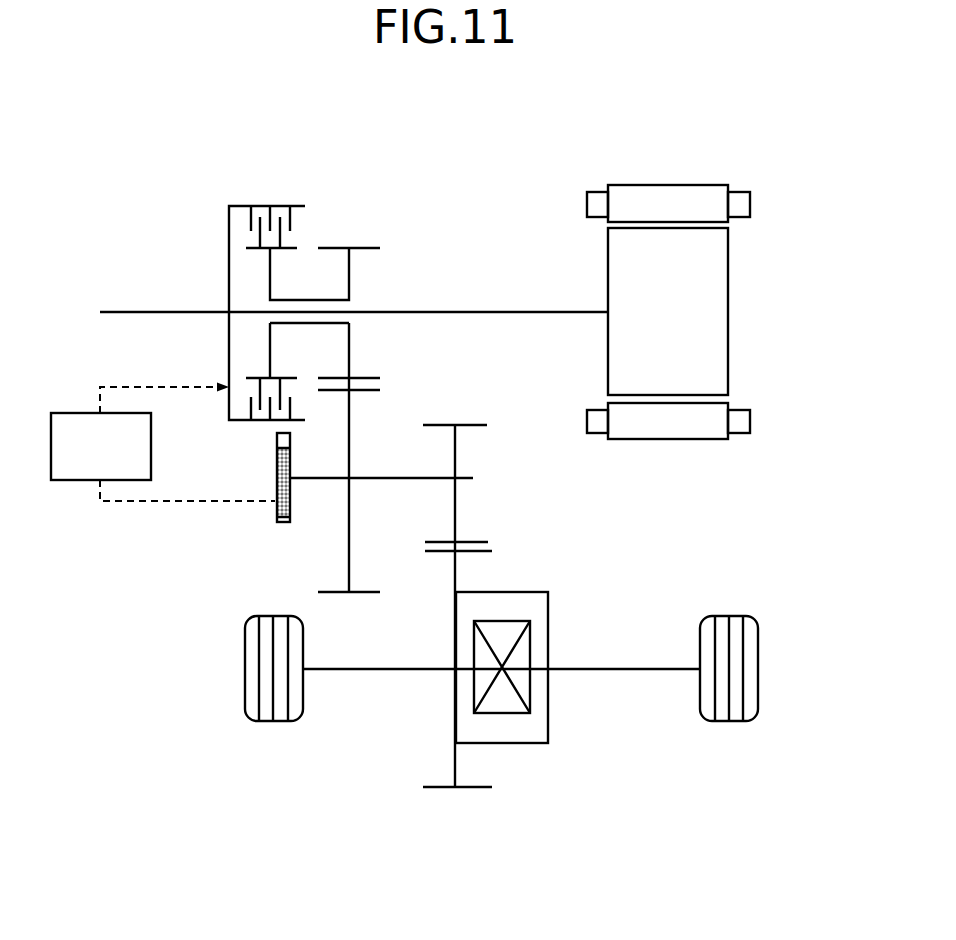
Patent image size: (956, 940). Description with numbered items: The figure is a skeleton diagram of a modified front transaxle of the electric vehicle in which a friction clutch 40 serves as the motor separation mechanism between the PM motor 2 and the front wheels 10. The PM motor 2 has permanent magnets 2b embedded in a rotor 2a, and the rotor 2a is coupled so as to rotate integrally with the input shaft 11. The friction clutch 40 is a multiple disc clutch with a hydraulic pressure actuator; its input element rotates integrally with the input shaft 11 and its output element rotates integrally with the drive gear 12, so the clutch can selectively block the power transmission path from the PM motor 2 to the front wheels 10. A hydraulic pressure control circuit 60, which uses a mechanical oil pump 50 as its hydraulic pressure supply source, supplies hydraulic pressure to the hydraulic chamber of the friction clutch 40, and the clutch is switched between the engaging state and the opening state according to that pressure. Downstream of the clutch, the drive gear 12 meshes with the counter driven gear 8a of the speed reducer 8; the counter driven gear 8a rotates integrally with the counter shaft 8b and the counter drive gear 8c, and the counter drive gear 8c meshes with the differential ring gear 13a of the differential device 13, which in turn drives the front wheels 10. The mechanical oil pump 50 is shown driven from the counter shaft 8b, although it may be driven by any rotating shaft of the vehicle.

The PM motor 2 is at (692, 274).
The rotor 2a is at (712, 280).
The permanent magnets 2b is at (664, 198).
The speed reducer 8 is at (457, 533).
The counter driven gear 8a is at (380, 392).
The counter shaft 8b is at (390, 480).
The counter drive gear 8c is at (470, 425).
The front wheels 10 is at (265, 721).
The input shaft 11 is at (534, 312).
The drive gear 12 is at (352, 248).
The differential device 13 is at (570, 730).
The differential ring gear 13a is at (470, 787).
The friction clutch 40 is at (267, 178).
The mechanical oil pump 50 is at (277, 522).
The hydraulic pressure control circuit 60 is at (72, 413).